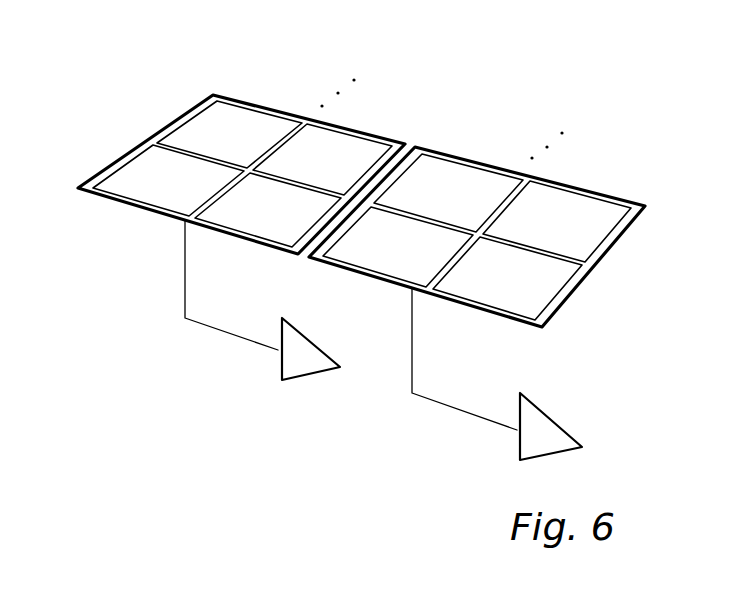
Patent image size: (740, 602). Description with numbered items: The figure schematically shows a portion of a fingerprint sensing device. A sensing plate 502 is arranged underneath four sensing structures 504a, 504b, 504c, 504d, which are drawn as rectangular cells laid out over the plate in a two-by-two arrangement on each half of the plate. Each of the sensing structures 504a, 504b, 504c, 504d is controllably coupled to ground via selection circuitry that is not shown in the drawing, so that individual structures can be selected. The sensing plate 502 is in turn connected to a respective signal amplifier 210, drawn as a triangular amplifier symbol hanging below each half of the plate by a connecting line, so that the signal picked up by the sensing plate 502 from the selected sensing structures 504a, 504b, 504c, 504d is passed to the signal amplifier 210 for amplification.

The sensing plate 502 is at (352, 181).
The sensing structure 504a is at (137, 176).
The sensing structure 504b is at (252, 215).
The sensing structure 504c is at (245, 124).
The sensing structure 504d is at (350, 163).
The signal amplifier 210 is at (285, 365).